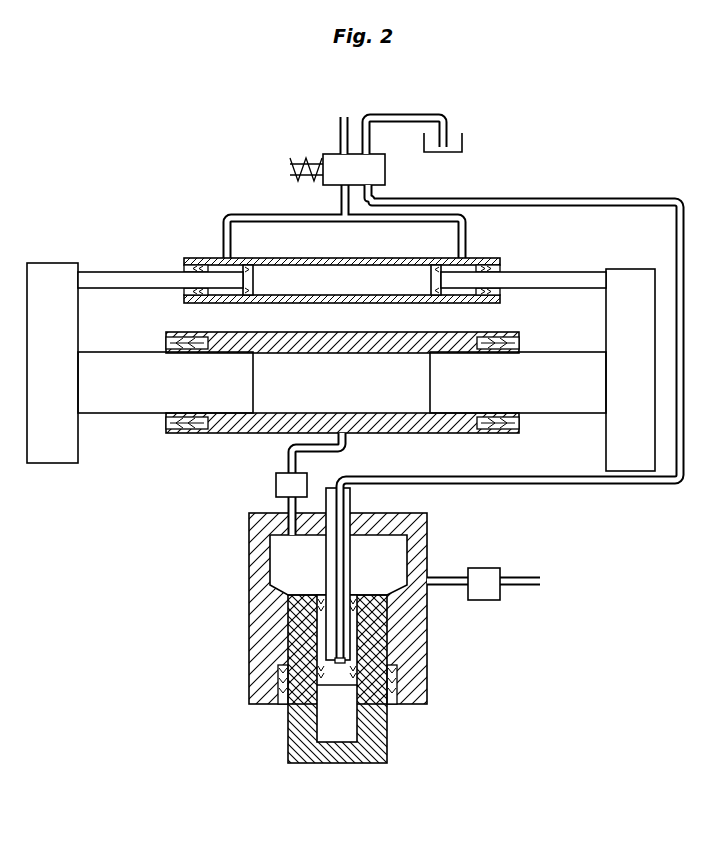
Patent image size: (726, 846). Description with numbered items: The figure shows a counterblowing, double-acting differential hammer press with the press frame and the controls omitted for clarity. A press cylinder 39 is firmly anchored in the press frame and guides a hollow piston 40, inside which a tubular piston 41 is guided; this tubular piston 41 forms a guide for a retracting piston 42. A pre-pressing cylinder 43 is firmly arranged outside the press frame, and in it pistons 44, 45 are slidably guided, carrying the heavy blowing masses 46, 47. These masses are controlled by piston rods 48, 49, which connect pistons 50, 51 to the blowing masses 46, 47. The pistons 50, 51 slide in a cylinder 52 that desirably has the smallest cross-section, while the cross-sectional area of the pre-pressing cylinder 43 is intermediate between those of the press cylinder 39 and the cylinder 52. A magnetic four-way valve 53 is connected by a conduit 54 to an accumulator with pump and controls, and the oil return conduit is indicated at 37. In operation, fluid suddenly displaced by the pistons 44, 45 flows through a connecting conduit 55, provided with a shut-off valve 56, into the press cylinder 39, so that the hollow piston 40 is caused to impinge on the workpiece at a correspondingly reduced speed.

The oil return conduit 37 is at (462, 152).
The press cylinder 39 is at (255, 618).
The hollow piston 40 is at (298, 725).
The tubular piston 41 is at (353, 550).
The retracting piston 42 is at (343, 664).
The pre-pressing cylinder 43 is at (335, 345).
The piston 44 is at (130, 398).
The piston 45 is at (574, 410).
The blowing mass 46 is at (50, 462).
The blowing mass 47 is at (634, 462).
The piston rod 48 is at (128, 274).
The piston rod 49 is at (547, 283).
The piston 50 is at (259, 285).
The piston 51 is at (430, 285).
The cylinder 52 is at (291, 258).
The magnetic four-way valve 53 is at (335, 180).
The conduit 54 is at (354, 120).
The connecting conduit 55 is at (287, 459).
The shut-off valve 56 is at (276, 488).